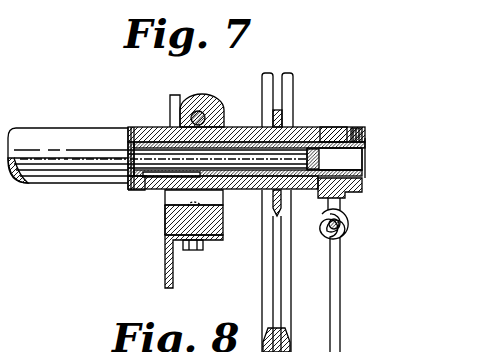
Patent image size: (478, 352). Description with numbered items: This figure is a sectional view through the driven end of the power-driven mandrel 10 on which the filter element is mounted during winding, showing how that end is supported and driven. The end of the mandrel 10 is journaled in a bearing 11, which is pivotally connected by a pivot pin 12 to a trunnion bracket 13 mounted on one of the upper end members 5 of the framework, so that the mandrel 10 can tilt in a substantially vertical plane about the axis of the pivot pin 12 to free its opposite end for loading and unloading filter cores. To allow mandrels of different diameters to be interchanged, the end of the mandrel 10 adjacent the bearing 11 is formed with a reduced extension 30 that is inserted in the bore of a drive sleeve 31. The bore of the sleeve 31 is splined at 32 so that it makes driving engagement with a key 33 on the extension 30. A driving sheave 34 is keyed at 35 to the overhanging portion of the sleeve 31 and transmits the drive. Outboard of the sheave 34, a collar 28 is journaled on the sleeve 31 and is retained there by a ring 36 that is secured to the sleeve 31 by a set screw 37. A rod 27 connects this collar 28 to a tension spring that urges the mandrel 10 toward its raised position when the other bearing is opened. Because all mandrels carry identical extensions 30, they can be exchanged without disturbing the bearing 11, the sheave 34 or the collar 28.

The upper end member 5 is at (168, 264).
The power-driven mandrel 10 is at (37, 141).
The bearing 11 is at (146, 124).
The pivot pin 12 is at (208, 108).
The trunnion bracket 13 is at (171, 219).
The rod 27 is at (339, 303).
The collar 28 is at (337, 127).
The reduced extension 30 is at (133, 189).
The drive sleeve 31 is at (146, 124).
The spline 32 is at (357, 152).
The key 33 is at (238, 140).
The driving sheave 34 is at (267, 275).
The key 35 is at (270, 180).
The ring 36 is at (362, 190).
The set screw 37 is at (356, 127).